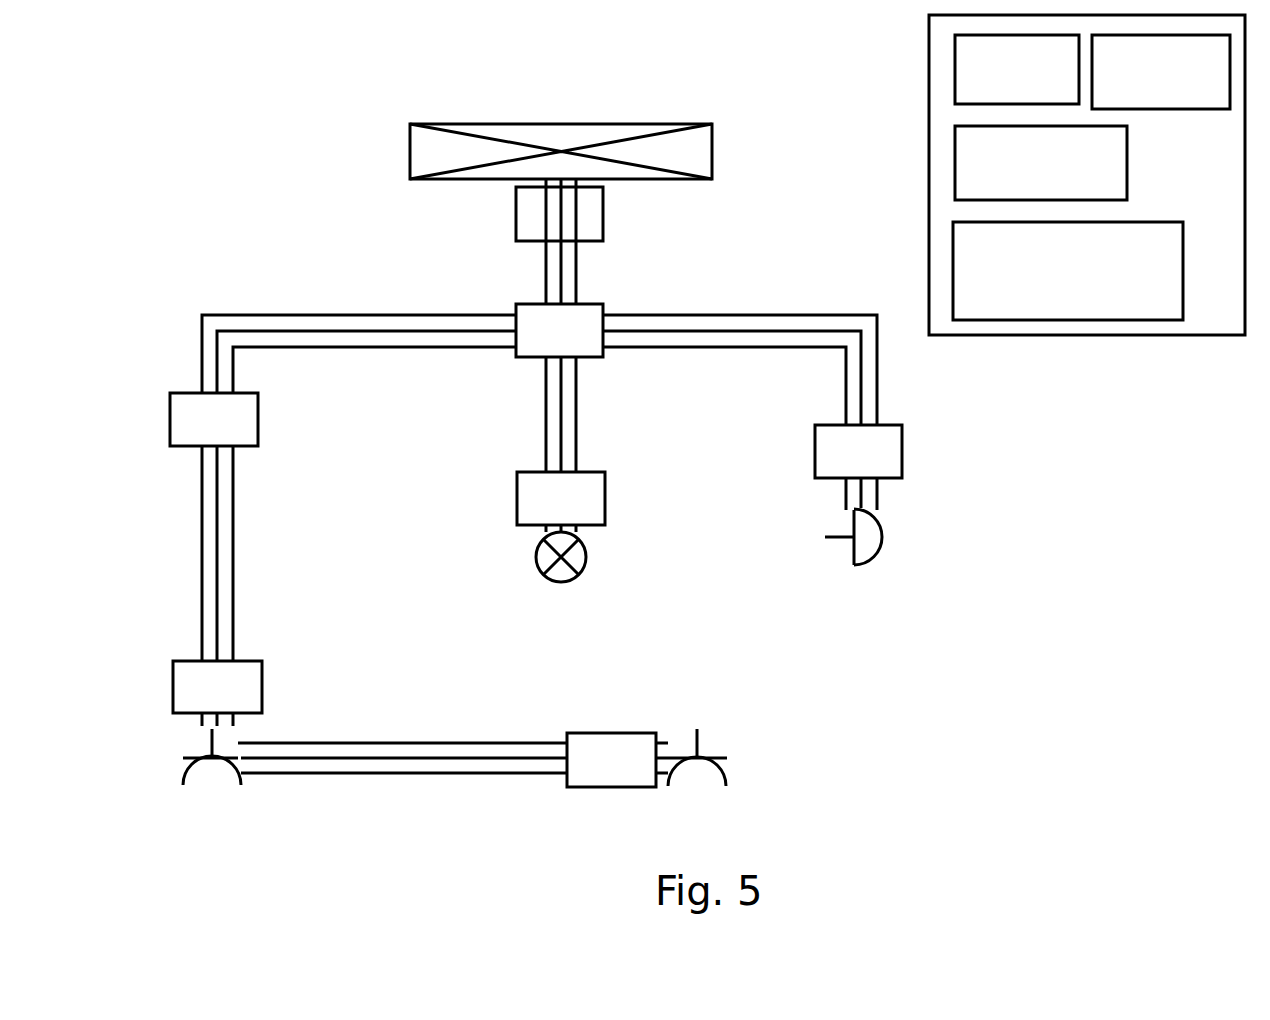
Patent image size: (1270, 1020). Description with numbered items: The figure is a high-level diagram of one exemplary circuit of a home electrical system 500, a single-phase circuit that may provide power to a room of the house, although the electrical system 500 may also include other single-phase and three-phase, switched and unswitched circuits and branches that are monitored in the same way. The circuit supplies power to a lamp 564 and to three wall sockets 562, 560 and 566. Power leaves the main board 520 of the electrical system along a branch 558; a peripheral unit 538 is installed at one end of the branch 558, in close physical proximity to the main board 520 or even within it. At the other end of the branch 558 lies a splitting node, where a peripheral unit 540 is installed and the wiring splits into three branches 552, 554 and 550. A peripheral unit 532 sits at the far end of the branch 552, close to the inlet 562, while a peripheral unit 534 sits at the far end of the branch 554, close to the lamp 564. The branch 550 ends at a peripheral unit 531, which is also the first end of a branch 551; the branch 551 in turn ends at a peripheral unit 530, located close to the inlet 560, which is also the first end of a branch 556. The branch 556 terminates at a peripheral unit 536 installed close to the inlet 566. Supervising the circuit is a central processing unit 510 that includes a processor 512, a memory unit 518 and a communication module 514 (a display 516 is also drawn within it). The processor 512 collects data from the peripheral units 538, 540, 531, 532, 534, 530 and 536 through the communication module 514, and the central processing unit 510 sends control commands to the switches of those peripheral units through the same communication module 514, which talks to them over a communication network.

The electrical system 500 is at (278, 100).
The central processing unit 510 is at (928, 108).
The processor 512 is at (1041, 163).
The communication module 514 is at (1068, 271).
The display 516 is at (1161, 72).
The memory unit 518 is at (1017, 69).
The main board 520 is at (565, 125).
The peripheral unit 530 is at (262, 684).
The peripheral unit 531 is at (260, 417).
The peripheral unit 532 is at (815, 447).
The peripheral unit 534 is at (605, 497).
The peripheral unit 536 is at (615, 733).
The peripheral unit 538 is at (516, 212).
The peripheral unit 540 is at (607, 310).
The branch 550 is at (300, 313).
The branch 551 is at (237, 535).
The branch 552 is at (727, 350).
The branch 554 is at (577, 433).
The branch 556 is at (470, 741).
The branch 558 is at (542, 282).
The wall socket 560 is at (225, 782).
The wall socket 562 is at (825, 537).
The lamp 564 is at (587, 553).
The wall socket 566 is at (700, 727).